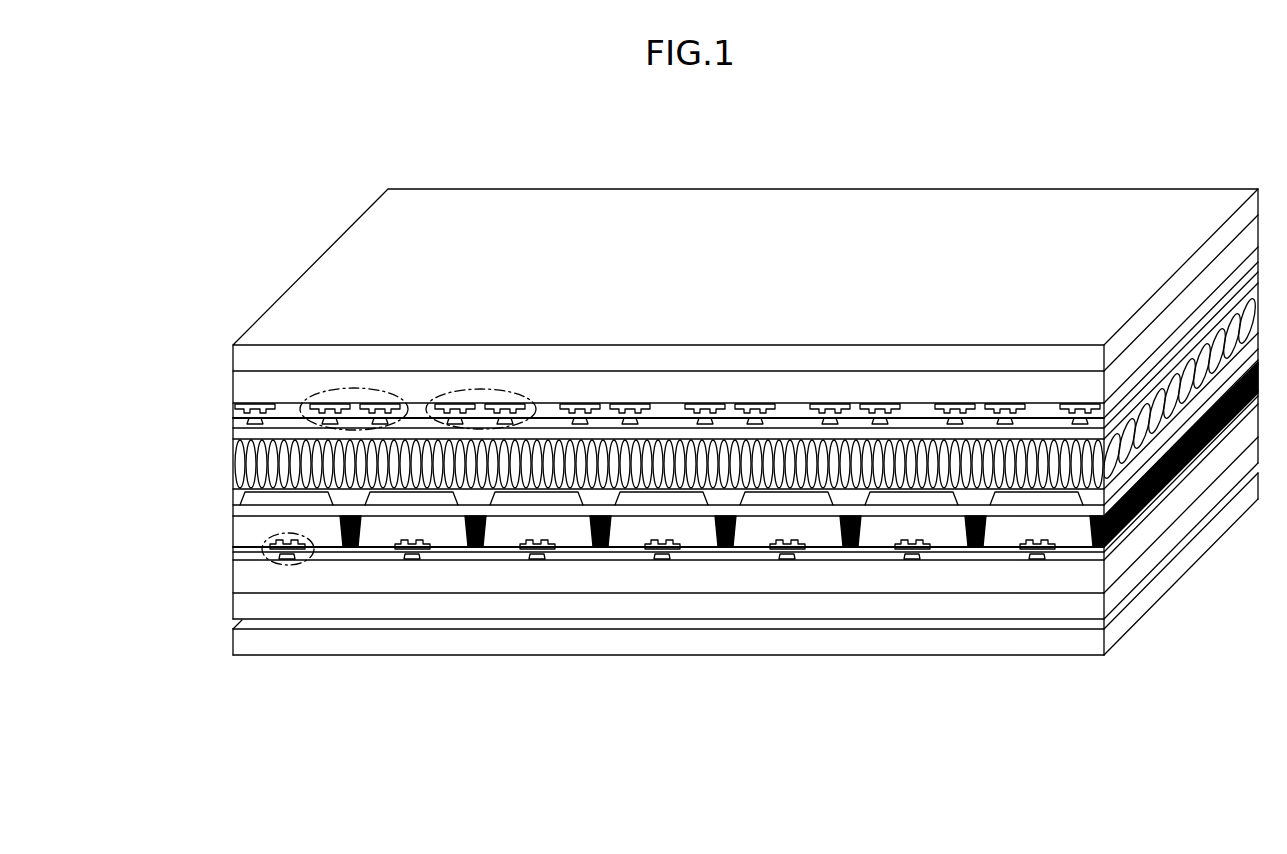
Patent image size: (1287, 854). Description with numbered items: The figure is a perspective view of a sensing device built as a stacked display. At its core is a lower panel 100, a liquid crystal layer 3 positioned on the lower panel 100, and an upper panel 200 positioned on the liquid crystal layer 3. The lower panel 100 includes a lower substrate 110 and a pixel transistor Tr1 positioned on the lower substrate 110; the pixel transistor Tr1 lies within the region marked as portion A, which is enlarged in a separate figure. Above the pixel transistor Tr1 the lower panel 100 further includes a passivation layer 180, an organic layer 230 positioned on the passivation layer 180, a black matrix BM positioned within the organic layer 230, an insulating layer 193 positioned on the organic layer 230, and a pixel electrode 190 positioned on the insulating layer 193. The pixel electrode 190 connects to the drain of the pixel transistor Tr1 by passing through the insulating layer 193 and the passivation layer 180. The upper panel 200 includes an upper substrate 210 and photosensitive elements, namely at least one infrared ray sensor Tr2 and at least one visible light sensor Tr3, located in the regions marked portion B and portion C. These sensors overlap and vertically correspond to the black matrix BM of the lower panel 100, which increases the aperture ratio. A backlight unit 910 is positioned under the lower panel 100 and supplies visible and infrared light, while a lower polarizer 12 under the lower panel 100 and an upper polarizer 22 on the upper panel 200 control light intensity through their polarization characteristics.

The upper panel 200 is at (170, 315).
The upper polarizer 22 is at (273, 356).
The visible light sensor Tr3 is at (452, 403).
The upper substrate 210 is at (253, 390).
The infrared ray sensor Tr2 is at (312, 419).
The portion B is at (334, 392).
The portion C is at (492, 392).
The liquid crystal layer 3 is at (238, 478).
The lower panel 100 is at (847, 702).
The pixel electrode 190 is at (562, 498).
The insulating layer 193 is at (626, 512).
The organic layer 230 is at (694, 530).
The passivation layer 180 is at (749, 550).
The pixel transistor Tr1 is at (280, 570).
The portion A is at (292, 575).
The black matrix BM is at (357, 550).
The lower substrate 110 is at (827, 578).
The lower polarizer 12 is at (962, 603).
The backlight unit 910 is at (903, 640).